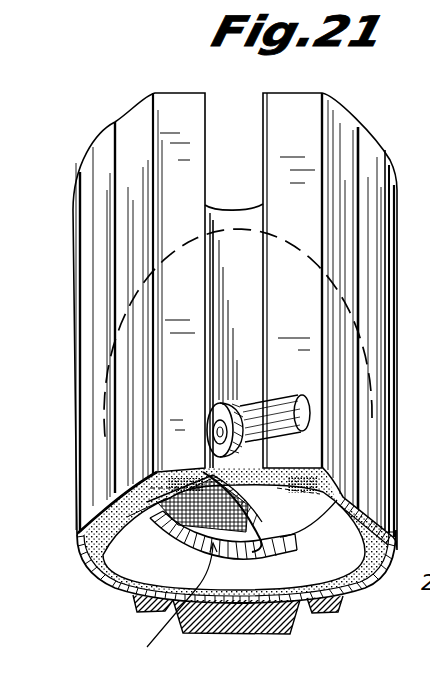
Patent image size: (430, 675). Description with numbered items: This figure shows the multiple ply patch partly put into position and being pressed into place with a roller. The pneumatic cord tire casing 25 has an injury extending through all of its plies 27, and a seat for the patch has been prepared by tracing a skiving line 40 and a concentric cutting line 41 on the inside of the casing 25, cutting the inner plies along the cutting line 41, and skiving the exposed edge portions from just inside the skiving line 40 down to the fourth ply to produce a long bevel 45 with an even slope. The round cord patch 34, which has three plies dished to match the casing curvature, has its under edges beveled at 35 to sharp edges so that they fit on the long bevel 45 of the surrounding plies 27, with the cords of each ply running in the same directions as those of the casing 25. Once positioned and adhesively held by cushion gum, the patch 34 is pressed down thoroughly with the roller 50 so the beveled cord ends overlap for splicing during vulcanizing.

The pneumatic cord tire casing 25 is at (88, 503).
The plies 27 is at (345, 499).
The round cord patch 34 is at (236, 280).
The beveled edges 35 is at (235, 500).
The skiving line 40 is at (180, 535).
The cutting line 41 is at (178, 606).
The long bevel 45 is at (248, 561).
The roller 50 is at (240, 402).